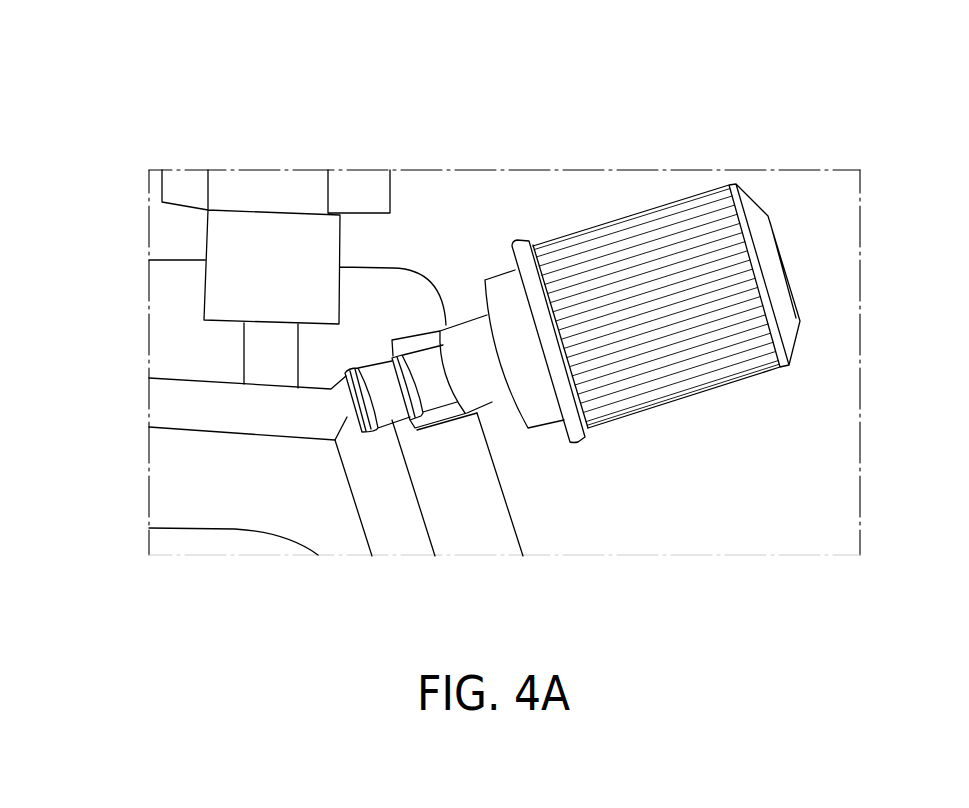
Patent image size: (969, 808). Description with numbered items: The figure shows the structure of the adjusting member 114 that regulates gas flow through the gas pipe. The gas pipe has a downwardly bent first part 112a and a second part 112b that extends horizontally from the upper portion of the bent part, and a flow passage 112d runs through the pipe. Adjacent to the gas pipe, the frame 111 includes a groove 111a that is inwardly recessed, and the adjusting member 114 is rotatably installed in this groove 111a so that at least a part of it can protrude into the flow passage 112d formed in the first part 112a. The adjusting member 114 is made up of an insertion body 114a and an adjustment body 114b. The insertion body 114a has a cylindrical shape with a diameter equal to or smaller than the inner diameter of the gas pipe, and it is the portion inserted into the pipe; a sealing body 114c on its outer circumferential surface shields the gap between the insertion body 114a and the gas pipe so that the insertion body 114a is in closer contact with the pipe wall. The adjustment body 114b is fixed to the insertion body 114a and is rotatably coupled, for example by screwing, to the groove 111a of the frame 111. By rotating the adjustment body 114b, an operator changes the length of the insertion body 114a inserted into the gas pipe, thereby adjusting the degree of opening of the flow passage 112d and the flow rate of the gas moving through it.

The adjusting member 114 is at (76, 52).
The insertion body 114a is at (377, 377).
The adjustment body 114b is at (635, 233).
The sealing body 114c is at (403, 355).
The frame 111 is at (513, 521).
The groove 111a is at (445, 421).
The first part 112a is at (357, 512).
The second part 112b is at (170, 378).
The flow passage 112d is at (197, 419).